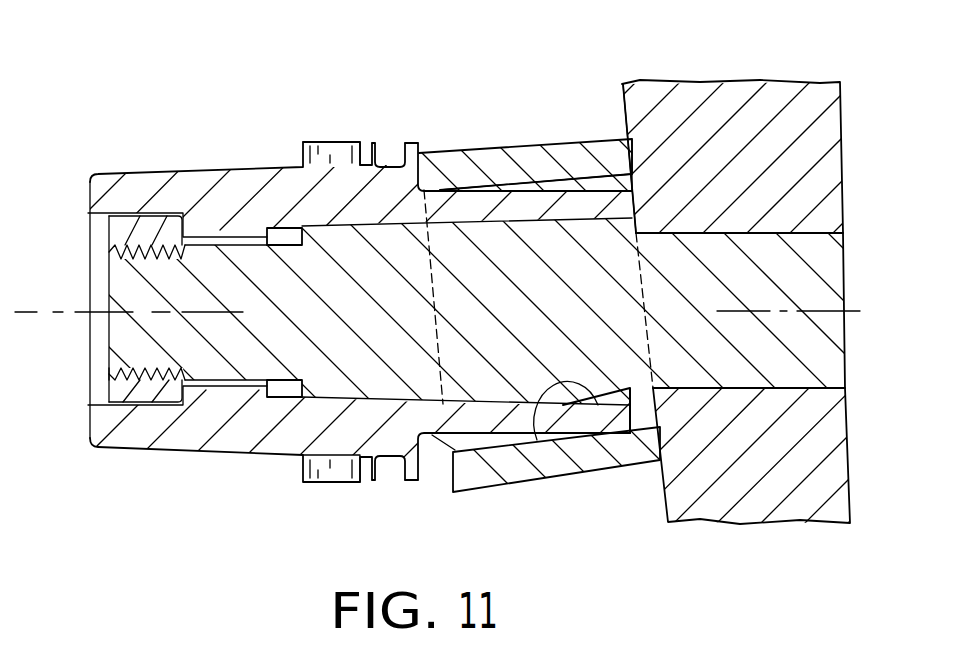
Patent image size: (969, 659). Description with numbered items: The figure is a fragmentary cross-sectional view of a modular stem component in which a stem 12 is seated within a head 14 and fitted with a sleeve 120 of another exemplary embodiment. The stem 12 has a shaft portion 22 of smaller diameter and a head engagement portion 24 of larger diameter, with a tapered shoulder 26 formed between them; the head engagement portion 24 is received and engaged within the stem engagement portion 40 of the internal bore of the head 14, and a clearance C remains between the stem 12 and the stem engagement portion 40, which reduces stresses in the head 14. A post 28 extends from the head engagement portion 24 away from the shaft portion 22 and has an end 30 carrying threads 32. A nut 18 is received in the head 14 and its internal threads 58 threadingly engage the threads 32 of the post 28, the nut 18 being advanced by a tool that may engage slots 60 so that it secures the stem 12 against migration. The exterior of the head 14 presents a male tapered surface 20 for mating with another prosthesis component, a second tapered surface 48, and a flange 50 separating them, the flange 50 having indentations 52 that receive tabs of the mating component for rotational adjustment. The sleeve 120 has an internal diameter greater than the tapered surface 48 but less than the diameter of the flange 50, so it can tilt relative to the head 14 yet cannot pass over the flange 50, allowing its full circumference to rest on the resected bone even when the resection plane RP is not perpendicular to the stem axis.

The head 14 is at (484, 293).
The tapered surface 20 is at (233, 168).
The indentations 52 is at (330, 153).
The flange 50 is at (362, 142).
The stem engagement portion 40 is at (473, 218).
The tapered surface 48 is at (545, 191).
The sleeve 120 is at (548, 83).
The resection plane RP is at (625, 106).
The stem 12 is at (720, 232).
The shaft portion 22 is at (817, 339).
The threads 58 is at (157, 243).
The nut 18 is at (136, 231).
The end 30 is at (130, 289).
The post 28 is at (138, 317).
The threads 32 is at (117, 383).
The slots 60 is at (120, 392).
The head engagement portion 24 is at (423, 373).
The tapered shoulder 26 is at (537, 440).
The clearance C is at (612, 398).